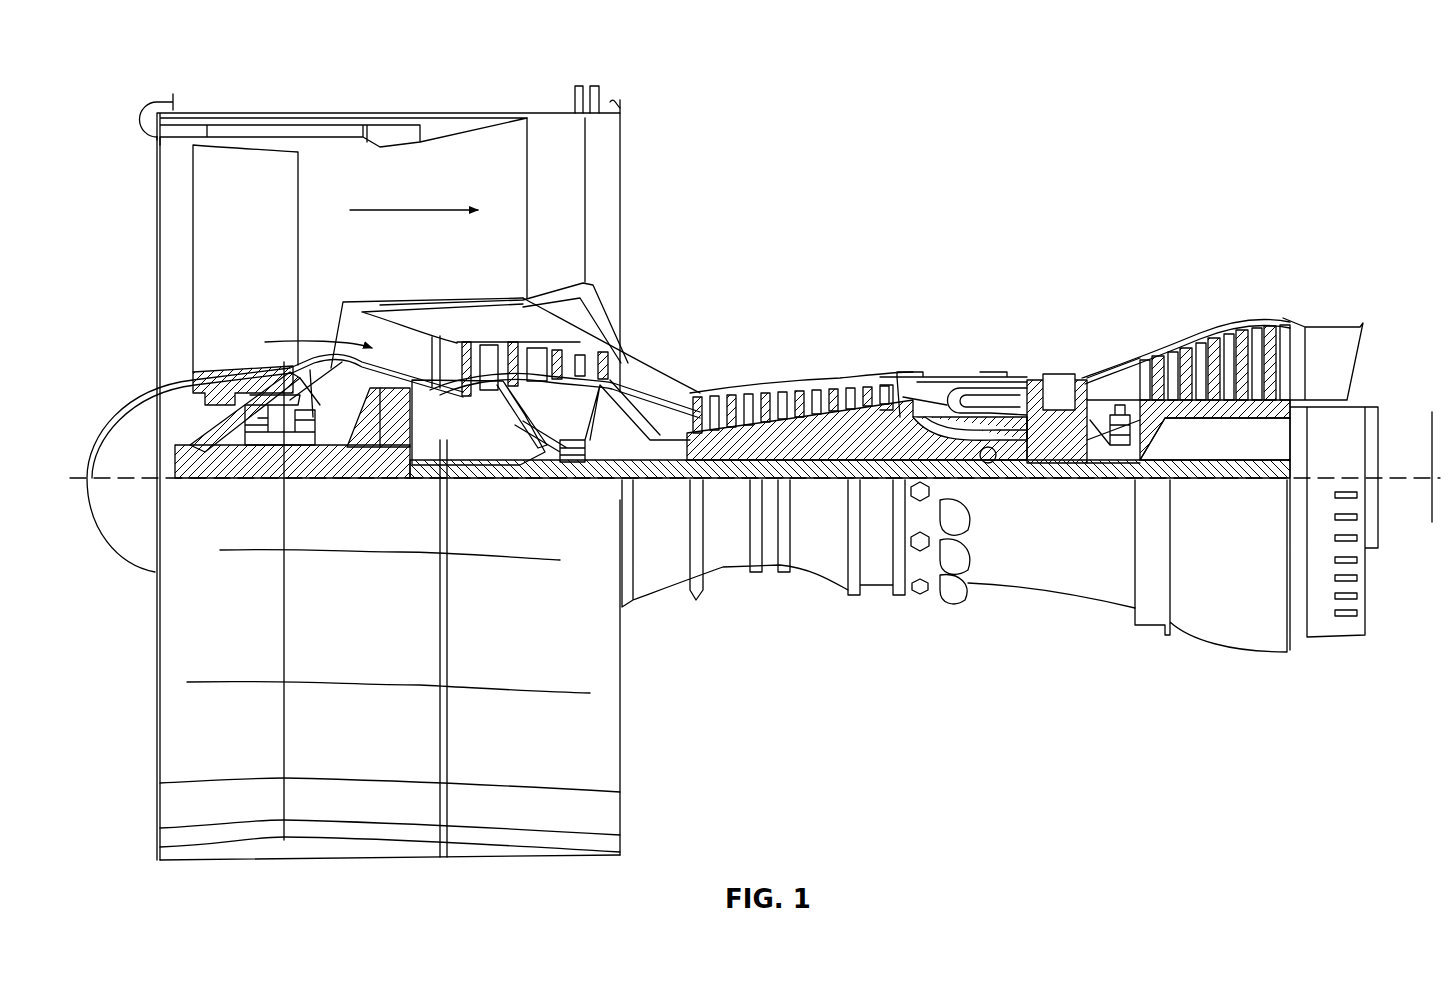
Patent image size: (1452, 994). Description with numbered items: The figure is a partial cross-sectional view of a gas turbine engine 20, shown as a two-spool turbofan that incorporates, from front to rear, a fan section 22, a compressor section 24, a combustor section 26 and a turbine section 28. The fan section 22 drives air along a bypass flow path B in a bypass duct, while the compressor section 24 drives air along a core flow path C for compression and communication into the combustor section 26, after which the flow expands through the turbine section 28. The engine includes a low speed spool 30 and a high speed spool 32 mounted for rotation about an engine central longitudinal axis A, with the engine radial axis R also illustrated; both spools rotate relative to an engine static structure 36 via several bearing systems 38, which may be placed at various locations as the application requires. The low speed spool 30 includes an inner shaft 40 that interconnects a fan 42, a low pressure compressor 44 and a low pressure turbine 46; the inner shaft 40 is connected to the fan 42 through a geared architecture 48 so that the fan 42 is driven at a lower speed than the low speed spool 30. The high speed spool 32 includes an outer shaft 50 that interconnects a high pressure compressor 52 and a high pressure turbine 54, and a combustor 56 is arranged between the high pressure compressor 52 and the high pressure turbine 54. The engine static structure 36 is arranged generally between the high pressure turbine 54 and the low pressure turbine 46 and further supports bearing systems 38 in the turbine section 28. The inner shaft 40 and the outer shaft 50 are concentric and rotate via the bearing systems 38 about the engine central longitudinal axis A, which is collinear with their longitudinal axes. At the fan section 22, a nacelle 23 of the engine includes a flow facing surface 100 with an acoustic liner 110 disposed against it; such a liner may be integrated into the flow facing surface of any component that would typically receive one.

The gas turbine engine 20 is at (1186, 148).
The fan section 22 is at (258, 110).
The nacelle 23 is at (123, 112).
The compressor section 24 is at (811, 250).
The combustor section 26 is at (975, 250).
The turbine section 28 is at (1119, 250).
The low speed spool 30 is at (846, 484).
The high speed spool 32 is at (890, 430).
The engine static structure 36 is at (878, 598).
The bearing systems 38 is at (258, 447).
The inner shaft 40 is at (640, 470).
The fan 42 is at (270, 244).
The low pressure compressor 44 is at (540, 355).
The low pressure turbine 46 is at (1220, 338).
The geared architecture 48 is at (390, 458).
The outer shaft 50 is at (1003, 452).
The high pressure compressor 52 is at (800, 440).
The high pressure turbine 54 is at (1053, 385).
The combustor 56 is at (982, 395).
The flow facing surface 100 is at (142, 138).
The acoustic liner 110 is at (177, 140).
The engine central longitudinal axis A is at (1432, 522).
The bypass flow path B is at (418, 210).
The core flow path C is at (282, 343).
The engine radial axis R is at (1430, 485).